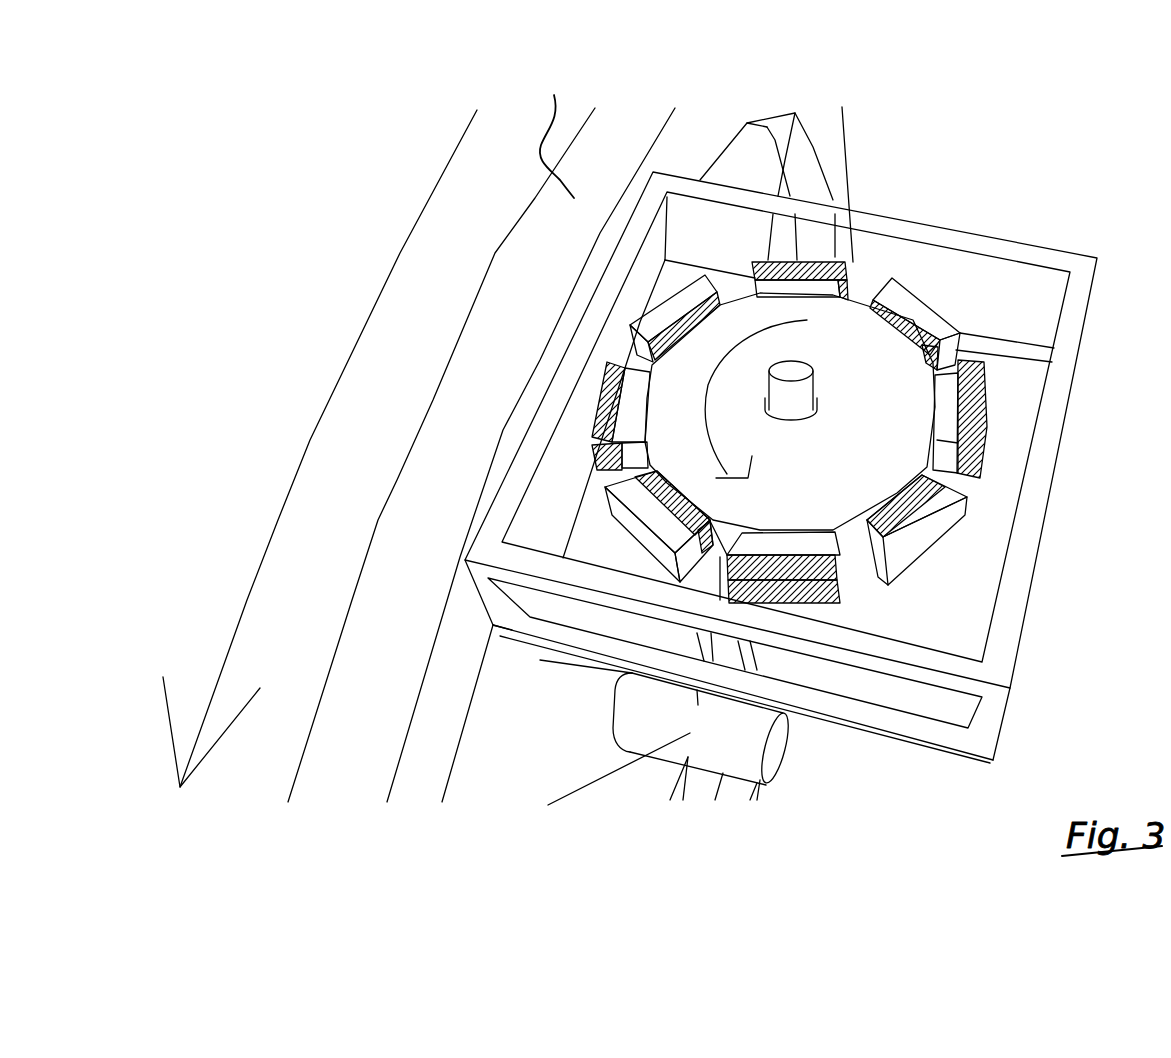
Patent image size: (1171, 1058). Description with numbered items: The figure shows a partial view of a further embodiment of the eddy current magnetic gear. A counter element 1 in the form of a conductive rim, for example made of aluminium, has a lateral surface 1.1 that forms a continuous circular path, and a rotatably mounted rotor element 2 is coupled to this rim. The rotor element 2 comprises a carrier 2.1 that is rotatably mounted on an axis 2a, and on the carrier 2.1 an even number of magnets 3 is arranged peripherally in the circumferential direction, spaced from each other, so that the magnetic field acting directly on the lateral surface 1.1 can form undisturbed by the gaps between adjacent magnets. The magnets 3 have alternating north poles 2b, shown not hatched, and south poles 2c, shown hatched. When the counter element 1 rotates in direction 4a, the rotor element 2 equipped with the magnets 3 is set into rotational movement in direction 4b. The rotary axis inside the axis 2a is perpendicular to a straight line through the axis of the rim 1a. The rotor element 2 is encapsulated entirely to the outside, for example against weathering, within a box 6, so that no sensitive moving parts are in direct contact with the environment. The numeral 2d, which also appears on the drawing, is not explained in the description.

The counter element 1 is at (437, 311).
The lateral surface 1.1 is at (548, 125).
The axis of the rim 1a is at (778, 750).
The rotor element 2 is at (866, 312).
The carrier 2.1 is at (663, 410).
The axis 2a is at (923, 306).
The north poles 2b is at (940, 318).
The south poles 2c is at (987, 398).
The shutter block 2d is at (855, 567).
The magnets 3 is at (830, 238).
The direction of rotational movement of the counter element 4a is at (318, 405).
The direction of rotational movement of the rotor element 4b is at (720, 447).
The box 6 is at (1008, 650).